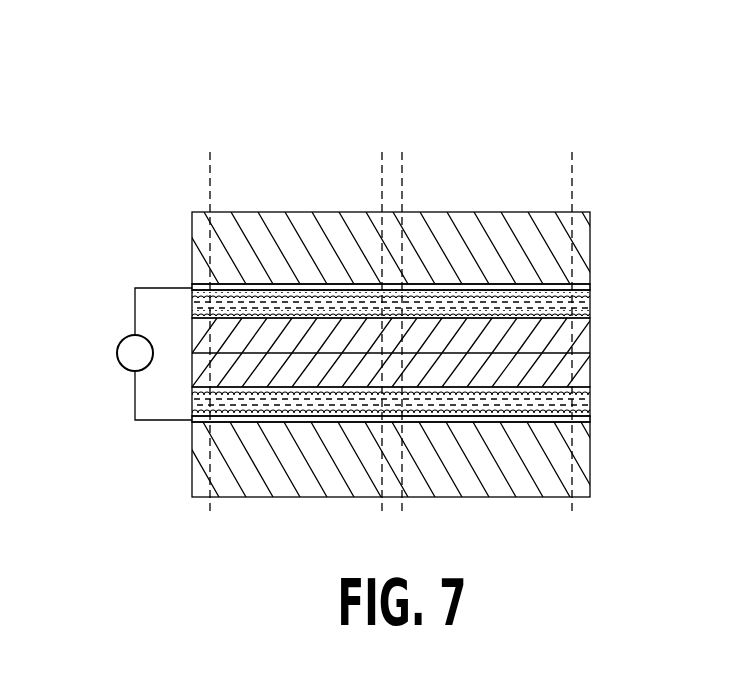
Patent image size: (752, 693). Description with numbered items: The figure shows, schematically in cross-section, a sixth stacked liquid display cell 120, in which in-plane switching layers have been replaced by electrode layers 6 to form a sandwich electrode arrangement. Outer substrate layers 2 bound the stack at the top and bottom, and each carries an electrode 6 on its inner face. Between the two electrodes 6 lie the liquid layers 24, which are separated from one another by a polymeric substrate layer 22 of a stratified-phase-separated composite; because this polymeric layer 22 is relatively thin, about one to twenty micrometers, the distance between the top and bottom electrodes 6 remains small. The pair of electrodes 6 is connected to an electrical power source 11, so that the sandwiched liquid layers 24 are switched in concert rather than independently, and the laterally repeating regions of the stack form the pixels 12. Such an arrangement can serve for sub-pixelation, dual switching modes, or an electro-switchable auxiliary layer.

The stacked liquid cell 120 is at (112, 210).
The pixel 12 is at (210, 158).
The substrate layer 2 is at (583, 227).
The electrode 6 is at (572, 284).
The liquid layer 24 is at (582, 307).
The polymeric substrate layer 22 is at (568, 343).
The electrical power source 11 is at (117, 352).